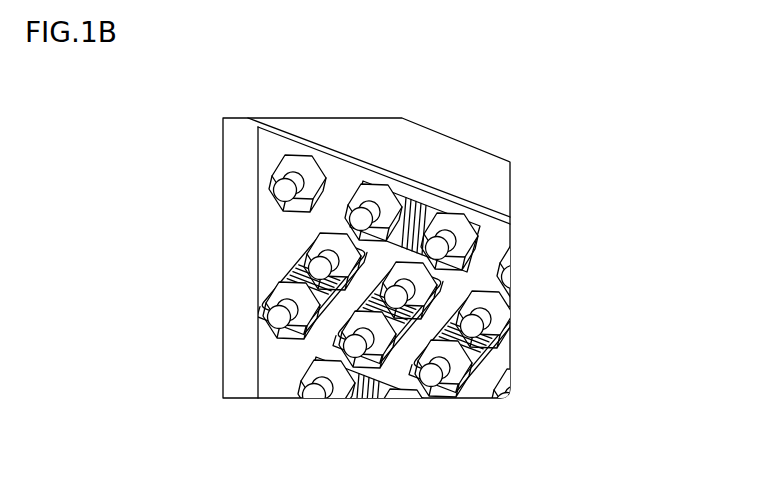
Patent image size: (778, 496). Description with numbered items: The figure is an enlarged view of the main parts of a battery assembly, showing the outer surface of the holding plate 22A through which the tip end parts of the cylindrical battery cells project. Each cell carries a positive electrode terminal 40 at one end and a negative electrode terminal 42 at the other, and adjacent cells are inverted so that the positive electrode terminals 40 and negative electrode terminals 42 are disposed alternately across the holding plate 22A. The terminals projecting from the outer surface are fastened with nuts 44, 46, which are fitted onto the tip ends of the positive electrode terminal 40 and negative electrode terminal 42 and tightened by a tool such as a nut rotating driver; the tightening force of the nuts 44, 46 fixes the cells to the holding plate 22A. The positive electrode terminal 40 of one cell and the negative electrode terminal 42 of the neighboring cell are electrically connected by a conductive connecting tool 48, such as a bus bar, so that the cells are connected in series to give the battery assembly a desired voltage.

The holding plate 22A is at (497, 193).
The positive electrode terminal 40 is at (275, 328).
The negative electrode terminal 42 is at (310, 268).
The nut 44 is at (293, 335).
The nut 46 is at (337, 242).
The conductive connecting tool 48 is at (292, 272).